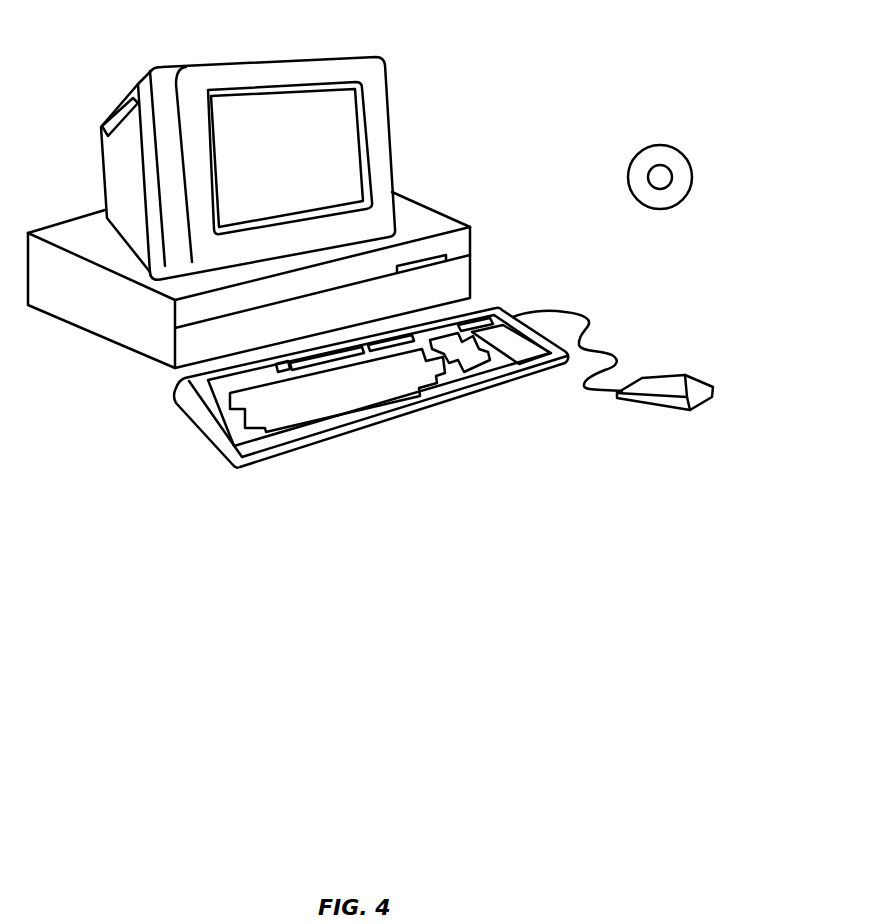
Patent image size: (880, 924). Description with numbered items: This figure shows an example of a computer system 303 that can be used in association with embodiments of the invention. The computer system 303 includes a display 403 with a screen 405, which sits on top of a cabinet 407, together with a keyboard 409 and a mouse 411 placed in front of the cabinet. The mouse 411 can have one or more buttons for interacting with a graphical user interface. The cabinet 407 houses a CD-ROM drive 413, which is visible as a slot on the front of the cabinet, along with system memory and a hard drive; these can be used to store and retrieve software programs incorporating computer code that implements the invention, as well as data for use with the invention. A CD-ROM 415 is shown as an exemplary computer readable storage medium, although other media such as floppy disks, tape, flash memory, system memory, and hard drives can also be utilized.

The computer system 303 is at (583, 37).
The display 403 is at (296, 168).
The screen 405 is at (362, 116).
The cabinet 407 is at (287, 300).
The keyboard 409 is at (378, 423).
The mouse 411 is at (703, 380).
The CD-ROM drive 413 is at (447, 254).
The CD-ROM 415 is at (675, 146).